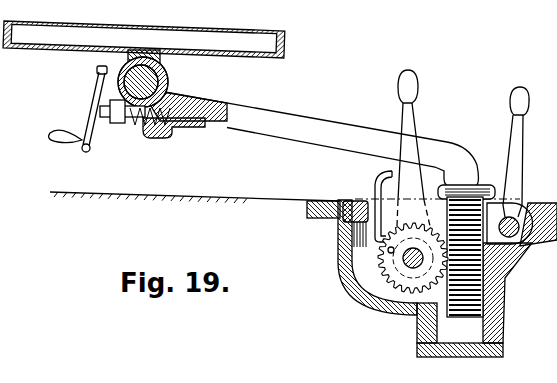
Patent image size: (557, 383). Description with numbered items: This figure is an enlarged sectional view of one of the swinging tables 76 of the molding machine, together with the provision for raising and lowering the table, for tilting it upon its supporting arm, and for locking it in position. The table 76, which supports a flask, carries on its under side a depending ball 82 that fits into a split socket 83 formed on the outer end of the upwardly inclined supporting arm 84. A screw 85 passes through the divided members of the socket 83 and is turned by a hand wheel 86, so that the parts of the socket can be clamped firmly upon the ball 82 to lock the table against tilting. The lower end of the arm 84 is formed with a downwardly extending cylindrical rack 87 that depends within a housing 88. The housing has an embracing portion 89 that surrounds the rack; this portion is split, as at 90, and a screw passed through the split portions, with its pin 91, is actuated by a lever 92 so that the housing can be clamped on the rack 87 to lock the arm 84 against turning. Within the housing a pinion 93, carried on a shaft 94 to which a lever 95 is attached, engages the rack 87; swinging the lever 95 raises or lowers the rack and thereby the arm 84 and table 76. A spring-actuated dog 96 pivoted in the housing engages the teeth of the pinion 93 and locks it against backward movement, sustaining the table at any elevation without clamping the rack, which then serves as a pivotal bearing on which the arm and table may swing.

The table 76 is at (128, 30).
The depending ball 82 is at (168, 80).
The split socket 83 is at (114, 80).
The supporting arm 84 is at (302, 122).
The screw 85 is at (133, 128).
The hand wheel 86 is at (91, 113).
The cylindrical rack 87 is at (497, 292).
The housing 88 is at (352, 268).
The embracing portion 89 is at (496, 254).
The split 90 is at (524, 236).
The pivot pin 91 is at (514, 221).
The lever 92 is at (512, 131).
The pinion 93 is at (412, 298).
The shaft 94 is at (406, 264).
The lever 95 is at (420, 124).
The spring-actuated dog 96 is at (345, 233).